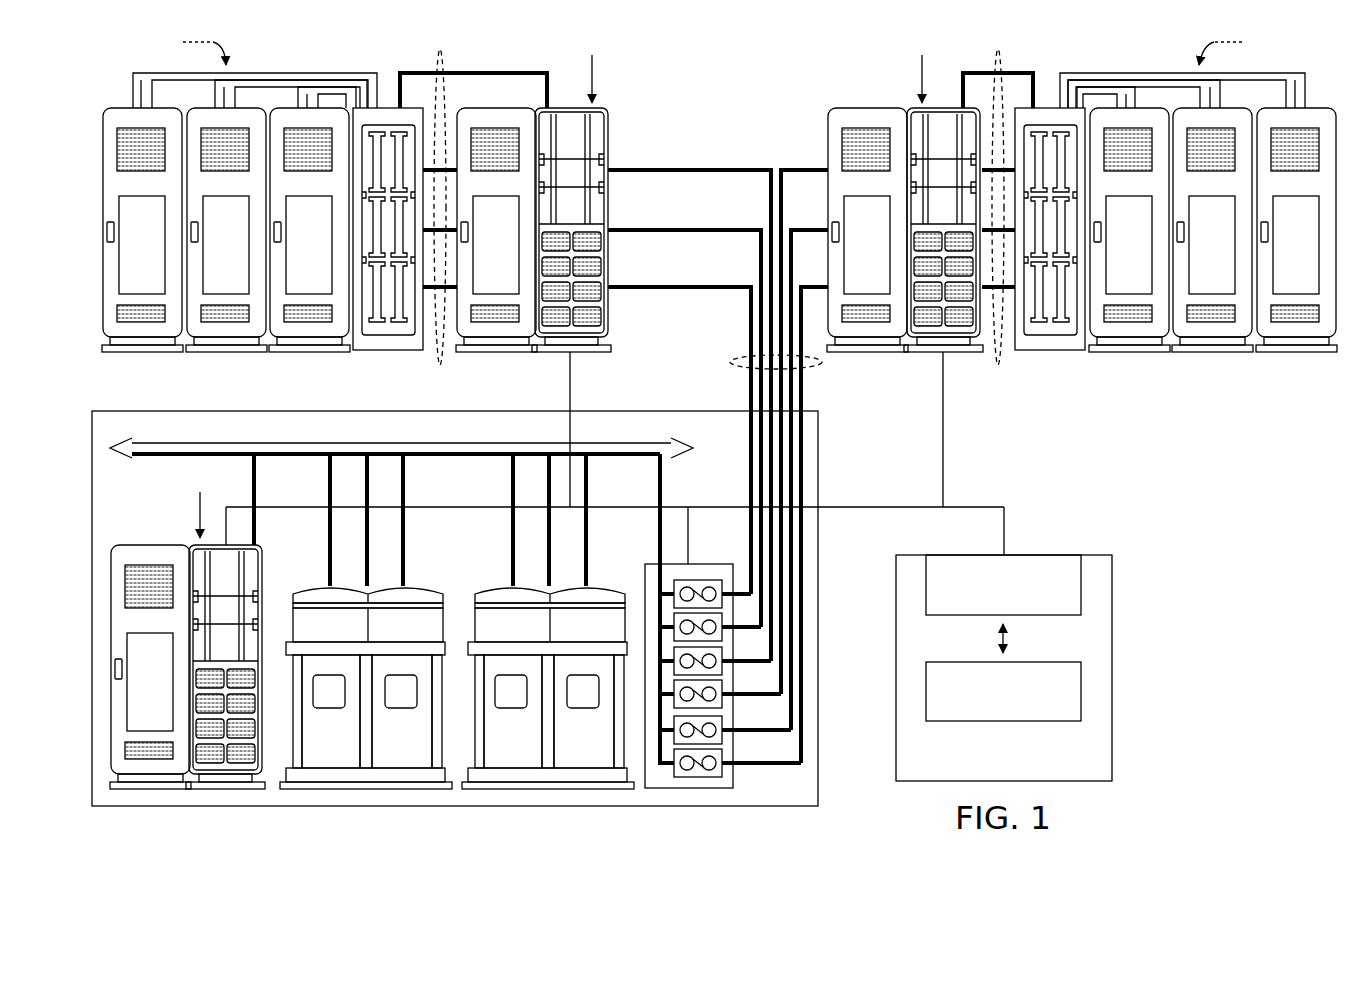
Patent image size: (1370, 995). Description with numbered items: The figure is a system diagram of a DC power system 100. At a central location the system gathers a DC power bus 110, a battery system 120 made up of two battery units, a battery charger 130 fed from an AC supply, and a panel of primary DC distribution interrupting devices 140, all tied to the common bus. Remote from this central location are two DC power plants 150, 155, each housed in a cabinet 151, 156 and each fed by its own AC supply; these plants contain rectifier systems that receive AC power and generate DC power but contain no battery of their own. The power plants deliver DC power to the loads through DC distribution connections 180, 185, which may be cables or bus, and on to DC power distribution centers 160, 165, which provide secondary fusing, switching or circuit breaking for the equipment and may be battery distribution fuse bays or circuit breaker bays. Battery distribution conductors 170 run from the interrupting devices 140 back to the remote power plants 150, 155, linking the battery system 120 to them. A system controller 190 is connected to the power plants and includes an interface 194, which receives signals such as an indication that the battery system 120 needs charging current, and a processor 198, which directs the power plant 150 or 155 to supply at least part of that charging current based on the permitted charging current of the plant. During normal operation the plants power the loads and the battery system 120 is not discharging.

The DC power system 100 is at (714, 419).
The DC power bus 110 is at (307, 458).
The battery system 120 is at (478, 580).
The battery charger 130 is at (148, 542).
The primary DC distribution interrupting devices 140 is at (650, 562).
The DC power plant 150 is at (565, 252).
The cabinet 151 is at (614, 142).
The DC power plant 155 is at (871, 255).
The cabinet 156 is at (825, 142).
The DC power distribution center 160 is at (383, 356).
The DC power distribution center 165 is at (1058, 356).
The battery distribution conductors 170 is at (738, 362).
The DC distribution connection 180 is at (438, 355).
The DC distribution connection 185 is at (1000, 355).
The system controller 190 is at (1004, 640).
The interface 194 is at (1020, 598).
The processor 198 is at (1020, 705).